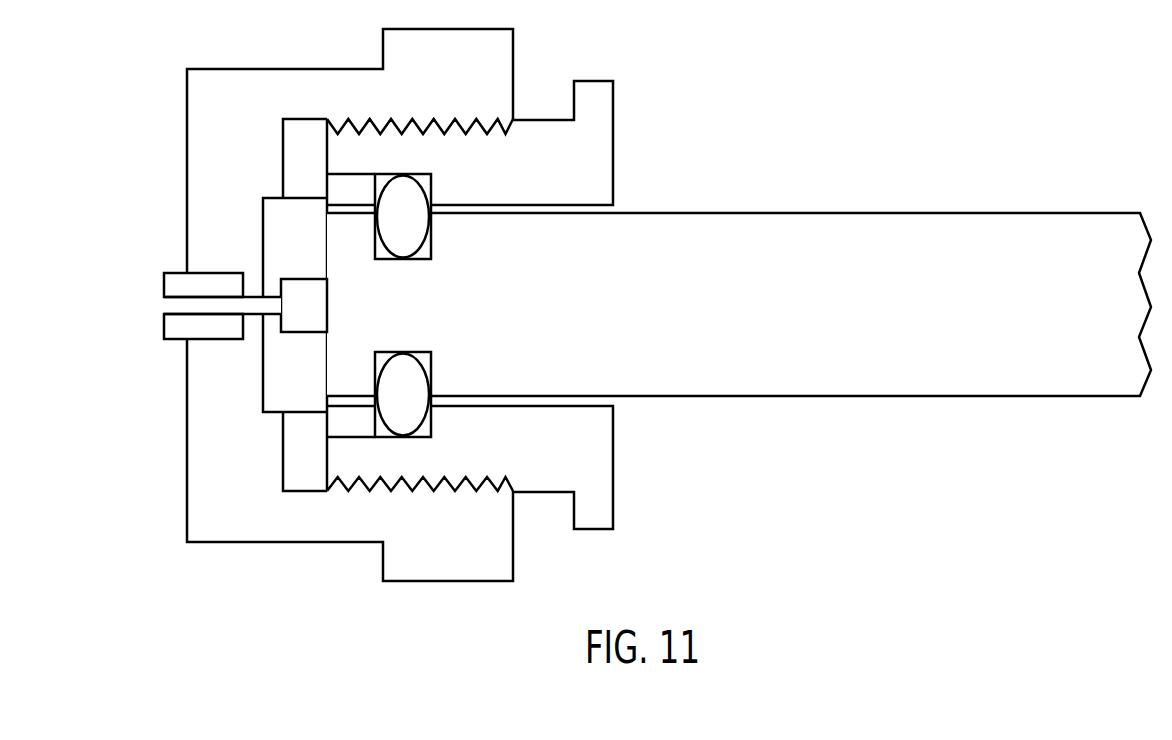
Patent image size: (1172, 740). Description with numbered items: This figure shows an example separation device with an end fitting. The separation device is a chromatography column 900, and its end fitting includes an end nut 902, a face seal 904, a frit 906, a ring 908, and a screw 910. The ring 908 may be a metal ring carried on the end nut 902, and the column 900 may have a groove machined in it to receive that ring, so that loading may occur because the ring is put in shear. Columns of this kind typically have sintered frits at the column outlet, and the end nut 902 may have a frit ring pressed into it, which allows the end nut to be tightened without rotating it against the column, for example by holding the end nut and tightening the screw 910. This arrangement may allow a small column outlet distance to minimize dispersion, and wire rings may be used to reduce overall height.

The chromatography column 900 is at (903, 221).
The end nut 902 is at (276, 527).
The face seal 904 is at (172, 328).
The frit 906 is at (327, 311).
The ring 908 is at (404, 248).
The screw 910 is at (597, 85).